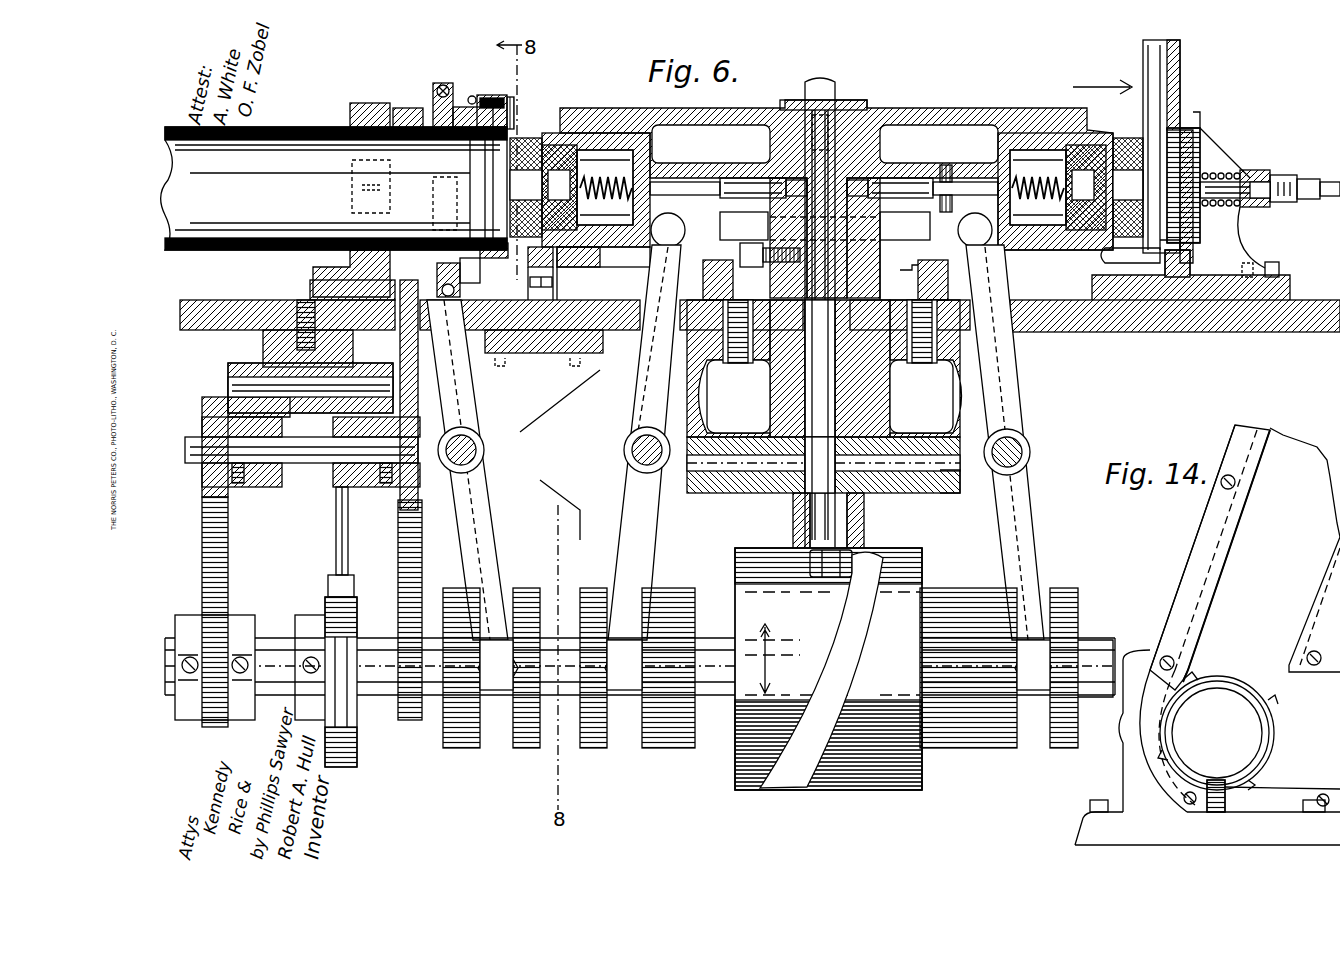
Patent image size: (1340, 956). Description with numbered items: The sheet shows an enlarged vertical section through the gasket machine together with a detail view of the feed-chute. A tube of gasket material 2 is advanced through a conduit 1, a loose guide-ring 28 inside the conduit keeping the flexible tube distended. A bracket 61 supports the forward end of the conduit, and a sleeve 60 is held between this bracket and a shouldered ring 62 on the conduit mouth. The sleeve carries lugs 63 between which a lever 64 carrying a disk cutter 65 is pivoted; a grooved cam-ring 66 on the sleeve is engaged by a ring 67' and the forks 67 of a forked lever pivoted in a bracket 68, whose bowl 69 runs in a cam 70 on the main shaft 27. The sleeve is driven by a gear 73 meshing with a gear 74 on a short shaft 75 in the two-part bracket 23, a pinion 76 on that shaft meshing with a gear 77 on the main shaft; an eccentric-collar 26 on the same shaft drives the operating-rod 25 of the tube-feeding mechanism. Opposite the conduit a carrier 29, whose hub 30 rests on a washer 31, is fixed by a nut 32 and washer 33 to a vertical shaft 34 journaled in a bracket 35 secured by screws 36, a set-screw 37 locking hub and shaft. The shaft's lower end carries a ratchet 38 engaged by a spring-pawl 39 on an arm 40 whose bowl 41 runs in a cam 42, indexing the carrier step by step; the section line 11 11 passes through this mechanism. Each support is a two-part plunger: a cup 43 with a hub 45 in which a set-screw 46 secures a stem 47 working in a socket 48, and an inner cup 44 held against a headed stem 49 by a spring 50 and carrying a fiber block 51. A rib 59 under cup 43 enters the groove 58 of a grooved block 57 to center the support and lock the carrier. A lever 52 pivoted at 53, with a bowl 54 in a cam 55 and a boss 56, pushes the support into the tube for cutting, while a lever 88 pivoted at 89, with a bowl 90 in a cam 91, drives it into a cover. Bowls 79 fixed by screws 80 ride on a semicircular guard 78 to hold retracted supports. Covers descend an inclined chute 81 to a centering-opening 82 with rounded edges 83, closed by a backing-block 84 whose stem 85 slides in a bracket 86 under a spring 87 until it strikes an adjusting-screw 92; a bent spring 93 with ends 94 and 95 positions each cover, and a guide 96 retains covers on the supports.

In FIG. 6, the conduit 1 is at (330, 128).
In FIG. 6, the tube of gasket material 2 is at (300, 142).
In FIG. 6, the guide-ring 28 is at (445, 198).
In FIG. 6, the bracket 61 is at (355, 112).
In FIG. 6, the gear 73 is at (408, 108).
In FIG. 6, the ring 67' is at (432, 94).
In FIG. 6, the grooved cam-ring 66 is at (463, 107).
In FIG. 6, the ears or lugs 63 is at (472, 96).
In FIG. 6, the disk cutter 65 is at (500, 95).
In FIG. 6, the lever 64 is at (514, 120).
In FIG. 6, the ring 62 is at (503, 258).
In FIG. 6, the groove 58 is at (528, 262).
In FIG. 6, the sleeve 60 is at (480, 275).
In FIG. 6, the grooved block 57 is at (553, 282).
In FIG. 6, the rib 59 is at (618, 267).
In FIG. 6, the carrier 29 is at (940, 108).
In FIG. 6, the washer 33 is at (868, 106).
In FIG. 6, the nut 32 is at (836, 95).
In FIG. 6, the vertical shaft 34 is at (819, 325).
In FIG. 6, the outer plunger part 43 is at (620, 133).
In FIG. 6, the block 51 is at (1132, 124).
In FIG. 6, the headed stem 49 is at (824, 187).
In FIG. 6, the inner plunger part 44 is at (821, 187).
In FIG. 6, the spring 50 is at (822, 187).
In FIG. 6, the hub 45 is at (668, 182).
In FIG. 6, the stem 47 is at (826, 188).
In FIG. 6, the socket 48 is at (748, 178).
In FIG. 6, the set-screw 46 is at (948, 165).
In FIG. 6, the set-screw 37 is at (744, 226).
In FIG. 6, the bowl 79 is at (740, 247).
In FIG. 6, the screw 80 is at (703, 268).
In FIG. 6, the semicircular guard 78 is at (1010, 283).
In FIG. 6, the hub 30 is at (880, 260).
In FIG. 6, the washer 31 is at (899, 270).
In FIG. 6, the bracket 35 is at (890, 398).
In FIG. 6, the screws 36 is at (748, 363).
In FIG. 6, the ratchet 38 is at (762, 493).
In FIG. 6, the spring-pawl 39 is at (926, 495).
In FIG. 6, the arm 40 is at (793, 527).
In FIG. 6, the stud or bowl 41 is at (875, 565).
In FIG. 6, the cam 42 is at (828, 669).
In FIG. 6, the boss or enlargement 56 is at (668, 230).
In FIG. 6, the lever 52 is at (644, 442).
In FIG. 6, the pivot 53 is at (624, 453).
In FIG. 6, the bowl 54 is at (630, 655).
In FIG. 6, the forks 67 is at (467, 467).
In FIG. 6, the bracket 68 is at (519, 455).
In FIG. 6, the bowl 69 is at (512, 655).
In FIG. 6, the adjusting-screw 92 is at (1295, 160).
In FIG. 6, the lever 88 is at (1005, 442).
In FIG. 6, the pivot 89 is at (1030, 450).
In FIG. 6, the bowl 90 is at (1048, 655).
In FIG. 6, the main shaft 27 is at (722, 636).
In FIG. 6, the gear 77 is at (228, 572).
In FIG. 6, the eccentric-collar 26 is at (326, 671).
In FIG. 6, the cam 70 is at (536, 590).
In FIG. 6, the cam 55 is at (637, 668).
In FIG. 6, the cam 91 is at (1016, 668).
In FIG. 6, the pinion 76 is at (202, 412).
In FIG. 6, the two-part bracket 23 is at (333, 423).
In FIG. 6, the short shaft 75 is at (316, 463).
In FIG. 6, the operating-rod 25 is at (348, 533).
In FIG. 6, the gear 74 is at (398, 541).
In FIG. 6, the section line 11 is at (1102, 79).
In FIG. 6, the chute 81 is at (1178, 88).
In FIG. 14, the chute 81 is at (1207, 635).
In FIG. 6, the rounded edges 83 is at (1185, 115).
In FIG. 6, the centering-opening 82 is at (1200, 118).
In FIG. 6, the backing-block 84 is at (1183, 185).
In FIG. 6, the bent-down end 94 is at (1175, 240).
In FIG. 6, the stem 85 is at (1228, 182).
In FIG. 6, the bracket 86 is at (1258, 170).
In FIG. 6, the spring 87 is at (1222, 207).
In FIG. 6, the bent-over end 95 is at (1200, 238).
In FIG. 6, the bent spring 93 is at (1130, 255).
In FIG. 14, the bent spring 93 is at (1225, 799).
In FIG. 14, the guide 96 is at (1325, 680).